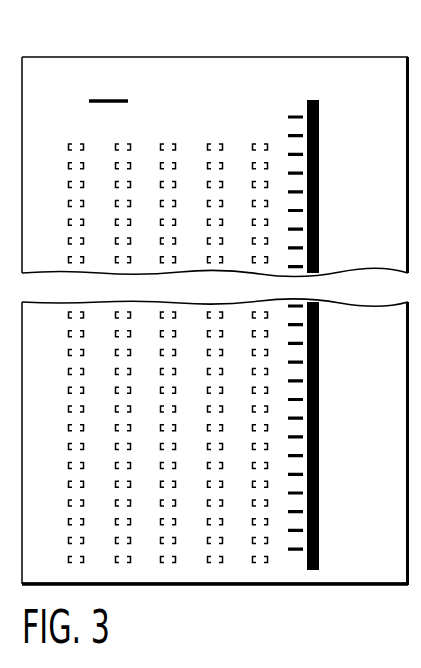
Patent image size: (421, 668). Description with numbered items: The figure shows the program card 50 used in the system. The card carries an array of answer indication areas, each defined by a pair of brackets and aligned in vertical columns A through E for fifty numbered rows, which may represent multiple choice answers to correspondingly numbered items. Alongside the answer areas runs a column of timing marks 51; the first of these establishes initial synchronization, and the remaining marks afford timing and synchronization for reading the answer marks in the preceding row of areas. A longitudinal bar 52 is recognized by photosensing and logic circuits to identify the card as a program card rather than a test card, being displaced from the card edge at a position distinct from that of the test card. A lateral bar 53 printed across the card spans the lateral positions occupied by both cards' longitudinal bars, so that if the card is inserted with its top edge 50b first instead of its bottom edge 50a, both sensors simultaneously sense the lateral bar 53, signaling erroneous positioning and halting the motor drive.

The program card 50 is at (215, 314).
The bottom edge 50a is at (212, 56).
The top edge 50b is at (255, 586).
The timing marks 51 is at (294, 116).
The longitudinal bar 52 is at (319, 102).
The lateral bar 53 is at (101, 99).